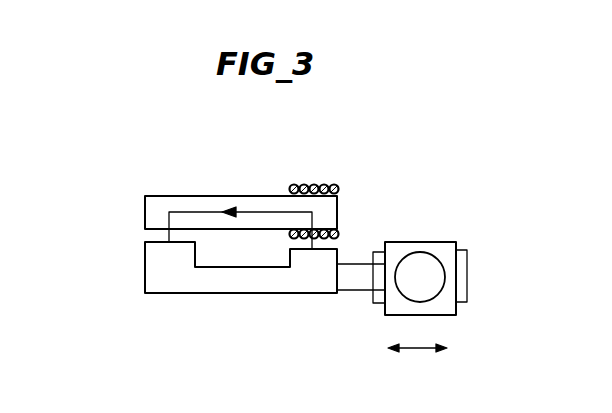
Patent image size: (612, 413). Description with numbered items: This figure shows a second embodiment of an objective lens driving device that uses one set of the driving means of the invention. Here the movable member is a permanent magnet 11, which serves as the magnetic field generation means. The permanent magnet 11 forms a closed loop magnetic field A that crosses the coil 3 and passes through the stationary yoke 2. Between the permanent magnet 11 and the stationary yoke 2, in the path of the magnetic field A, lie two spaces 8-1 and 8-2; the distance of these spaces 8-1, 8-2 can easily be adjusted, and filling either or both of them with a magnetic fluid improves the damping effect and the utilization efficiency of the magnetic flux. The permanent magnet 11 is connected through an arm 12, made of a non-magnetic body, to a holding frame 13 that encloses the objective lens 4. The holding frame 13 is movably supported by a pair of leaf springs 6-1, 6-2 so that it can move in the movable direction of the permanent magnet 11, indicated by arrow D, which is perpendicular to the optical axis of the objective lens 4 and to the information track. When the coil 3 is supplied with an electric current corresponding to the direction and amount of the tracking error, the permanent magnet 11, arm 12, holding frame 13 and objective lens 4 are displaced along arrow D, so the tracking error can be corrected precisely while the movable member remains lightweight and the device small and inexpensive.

The stationary yoke 2 is at (203, 203).
The magnetic field A is at (252, 211).
The coil 3 is at (302, 185).
The space 8-1 is at (339, 240).
The space 8-2 is at (145, 236).
The permanent magnet 11 is at (238, 285).
The arm 12 is at (353, 283).
The leaf spring 6-2 is at (380, 304).
The objective lens 4 is at (418, 267).
The holding frame 13 is at (453, 250).
The leaf spring 6-1 is at (467, 289).
The arrow D is at (420, 350).